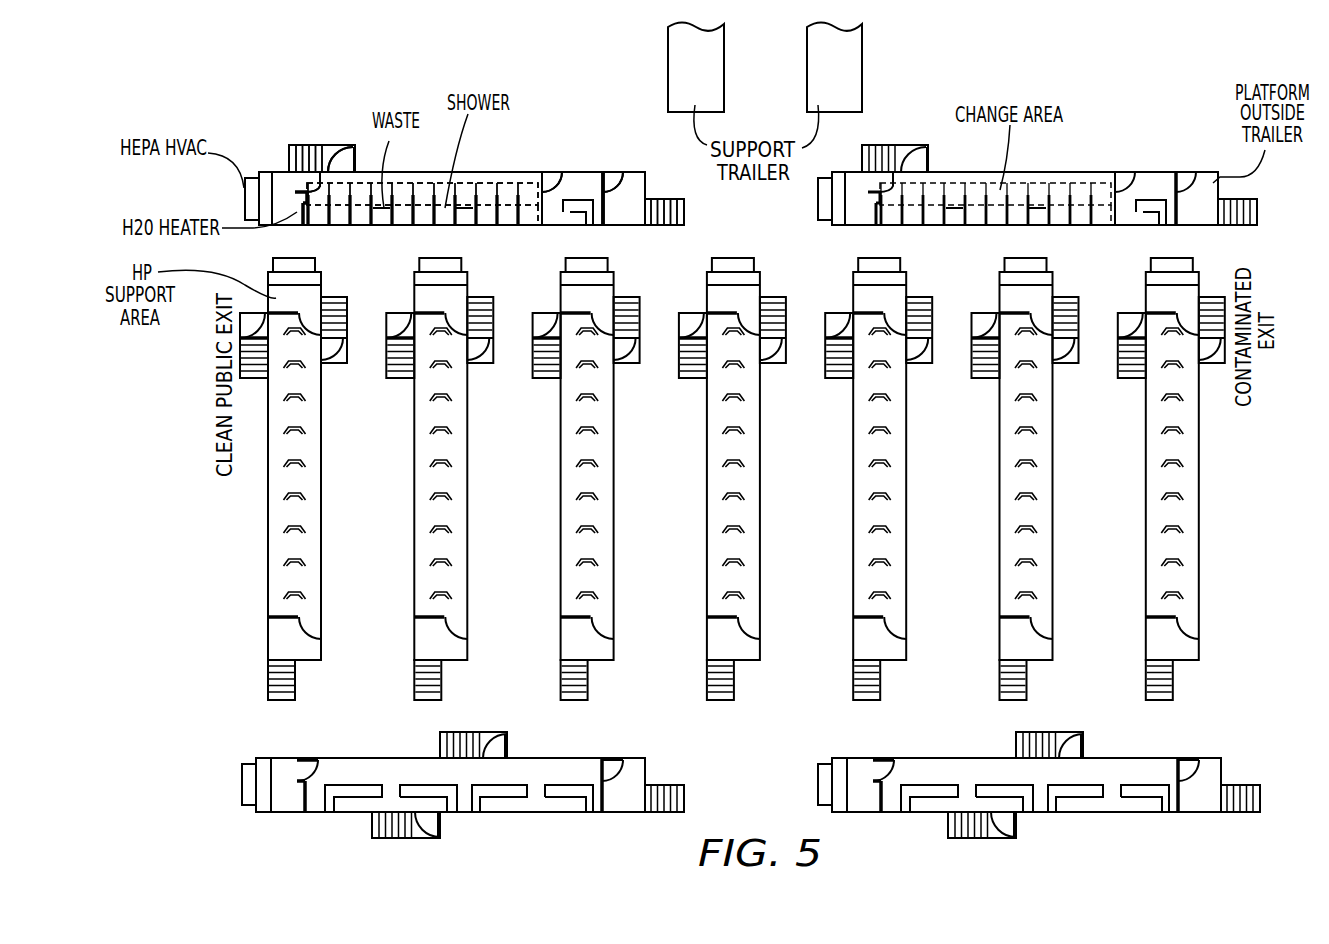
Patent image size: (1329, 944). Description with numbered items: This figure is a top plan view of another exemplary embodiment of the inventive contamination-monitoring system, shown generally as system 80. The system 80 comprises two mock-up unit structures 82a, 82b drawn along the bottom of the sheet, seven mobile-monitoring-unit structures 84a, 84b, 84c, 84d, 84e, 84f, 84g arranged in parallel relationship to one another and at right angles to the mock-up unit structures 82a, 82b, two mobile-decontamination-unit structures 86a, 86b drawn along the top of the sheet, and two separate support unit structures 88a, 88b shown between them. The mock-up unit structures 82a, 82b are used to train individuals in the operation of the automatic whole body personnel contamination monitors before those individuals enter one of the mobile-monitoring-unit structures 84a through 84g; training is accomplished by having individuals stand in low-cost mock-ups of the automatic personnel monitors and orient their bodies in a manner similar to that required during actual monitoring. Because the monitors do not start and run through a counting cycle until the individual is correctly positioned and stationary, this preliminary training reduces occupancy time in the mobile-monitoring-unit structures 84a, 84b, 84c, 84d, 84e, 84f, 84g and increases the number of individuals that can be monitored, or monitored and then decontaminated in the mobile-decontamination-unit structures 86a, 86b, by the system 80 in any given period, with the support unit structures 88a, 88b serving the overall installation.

The system 80 is at (352, 127).
The mock-up unit structure 82a is at (565, 747).
The mock-up unit structure 82b is at (930, 747).
The mobile-monitoring-unit structure 84a is at (328, 548).
The mobile-monitoring-unit structure 84b is at (456, 479).
The mobile-monitoring-unit structure 84c is at (602, 479).
The mobile-monitoring-unit structure 84d is at (749, 479).
The mobile-monitoring-unit structure 84e is at (895, 479).
The mobile-monitoring-unit structure 84f is at (1039, 479).
The mobile-monitoring-unit structure 84g is at (1188, 479).
The mobile-decontamination-unit structure 86a is at (486, 163).
The mobile-decontamination-unit structure 86b is at (1060, 163).
The support unit structure 88a is at (660, 73).
The support unit structure 88b is at (870, 73).